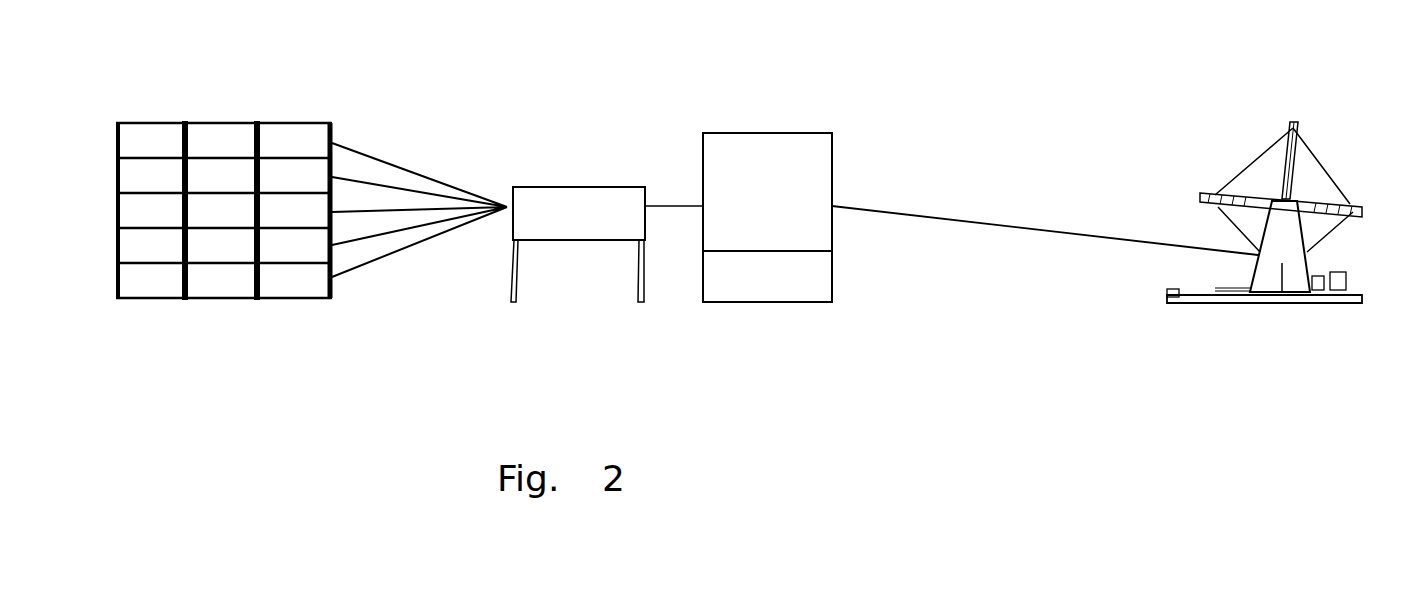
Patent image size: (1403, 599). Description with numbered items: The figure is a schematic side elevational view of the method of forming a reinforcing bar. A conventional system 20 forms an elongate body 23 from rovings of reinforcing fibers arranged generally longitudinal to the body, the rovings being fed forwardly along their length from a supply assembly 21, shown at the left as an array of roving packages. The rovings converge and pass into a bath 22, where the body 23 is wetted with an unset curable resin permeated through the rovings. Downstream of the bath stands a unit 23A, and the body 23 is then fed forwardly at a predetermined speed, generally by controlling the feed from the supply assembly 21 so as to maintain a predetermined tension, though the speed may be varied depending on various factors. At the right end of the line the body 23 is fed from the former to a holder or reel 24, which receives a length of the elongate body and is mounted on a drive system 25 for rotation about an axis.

The system 20 is at (420, 140).
The supply assembly 21 is at (311, 100).
The bath 22 is at (624, 168).
The converter unit 23A is at (767, 177).
The elongate body 23 is at (940, 213).
The holder or reel 24 is at (1325, 133).
The drive system 25 is at (1233, 312).